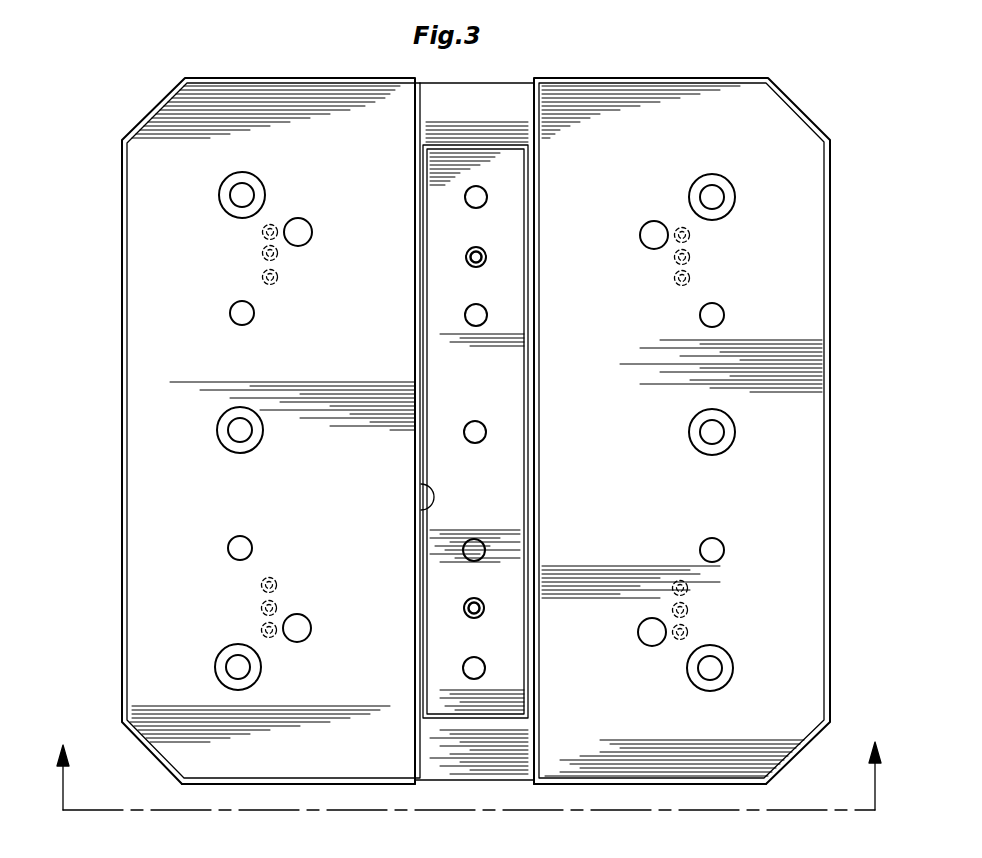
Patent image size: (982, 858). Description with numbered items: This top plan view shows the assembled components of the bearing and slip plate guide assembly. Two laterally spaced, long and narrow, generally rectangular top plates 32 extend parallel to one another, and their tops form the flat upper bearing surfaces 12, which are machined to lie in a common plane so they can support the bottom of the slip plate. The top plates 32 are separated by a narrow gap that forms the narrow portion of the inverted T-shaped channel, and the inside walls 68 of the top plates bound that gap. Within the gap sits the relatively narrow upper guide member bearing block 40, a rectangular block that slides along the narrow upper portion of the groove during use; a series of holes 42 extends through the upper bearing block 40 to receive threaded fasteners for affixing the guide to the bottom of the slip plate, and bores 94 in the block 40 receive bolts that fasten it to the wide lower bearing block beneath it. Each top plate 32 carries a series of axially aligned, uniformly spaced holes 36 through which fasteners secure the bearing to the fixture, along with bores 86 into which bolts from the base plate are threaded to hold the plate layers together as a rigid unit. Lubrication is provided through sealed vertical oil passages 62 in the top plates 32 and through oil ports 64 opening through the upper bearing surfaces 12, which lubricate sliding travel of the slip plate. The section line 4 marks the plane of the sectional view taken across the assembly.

The upper bearing surface 12 is at (143, 450).
The top plate 32 is at (315, 784).
The holes 36 is at (262, 195).
The upper guide member bearing block 40 is at (527, 690).
The holes 42 is at (478, 305).
The sealed vertical oil passages 62 is at (262, 276).
The oil ports 64 is at (302, 232).
The inside walls 68 is at (528, 450).
The bores 86 is at (254, 314).
The bores 94 is at (466, 262).
The section line 4- 4 is at (468, 764).